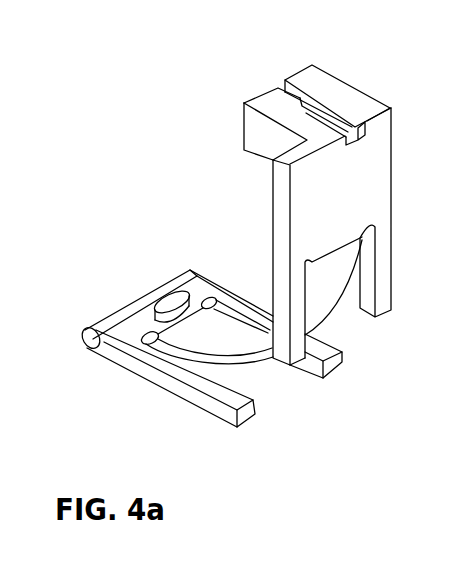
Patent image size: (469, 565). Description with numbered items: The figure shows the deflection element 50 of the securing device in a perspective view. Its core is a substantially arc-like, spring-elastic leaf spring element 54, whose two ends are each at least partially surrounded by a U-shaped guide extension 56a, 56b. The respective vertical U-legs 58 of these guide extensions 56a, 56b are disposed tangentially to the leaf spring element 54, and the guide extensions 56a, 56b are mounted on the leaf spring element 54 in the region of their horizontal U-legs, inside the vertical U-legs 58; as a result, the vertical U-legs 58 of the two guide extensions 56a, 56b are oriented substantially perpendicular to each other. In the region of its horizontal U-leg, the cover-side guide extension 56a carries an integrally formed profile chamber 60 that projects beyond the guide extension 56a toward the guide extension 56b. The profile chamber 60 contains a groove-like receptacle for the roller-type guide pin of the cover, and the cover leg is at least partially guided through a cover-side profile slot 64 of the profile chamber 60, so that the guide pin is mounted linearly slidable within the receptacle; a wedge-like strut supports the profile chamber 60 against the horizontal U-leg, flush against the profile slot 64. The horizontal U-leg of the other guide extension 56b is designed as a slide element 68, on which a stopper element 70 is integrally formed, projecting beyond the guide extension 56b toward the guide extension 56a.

The deflection element 50 is at (94, 181).
The leaf spring element 54 is at (249, 343).
The cover-side guide extension 56a is at (328, 204).
The guide extension 56b is at (139, 330).
The vertical U-legs 58 is at (285, 282).
The profile chamber 60 is at (345, 93).
The profile slot 64 is at (283, 89).
The slide element 68 is at (124, 311).
The stopper element 70 is at (173, 300).